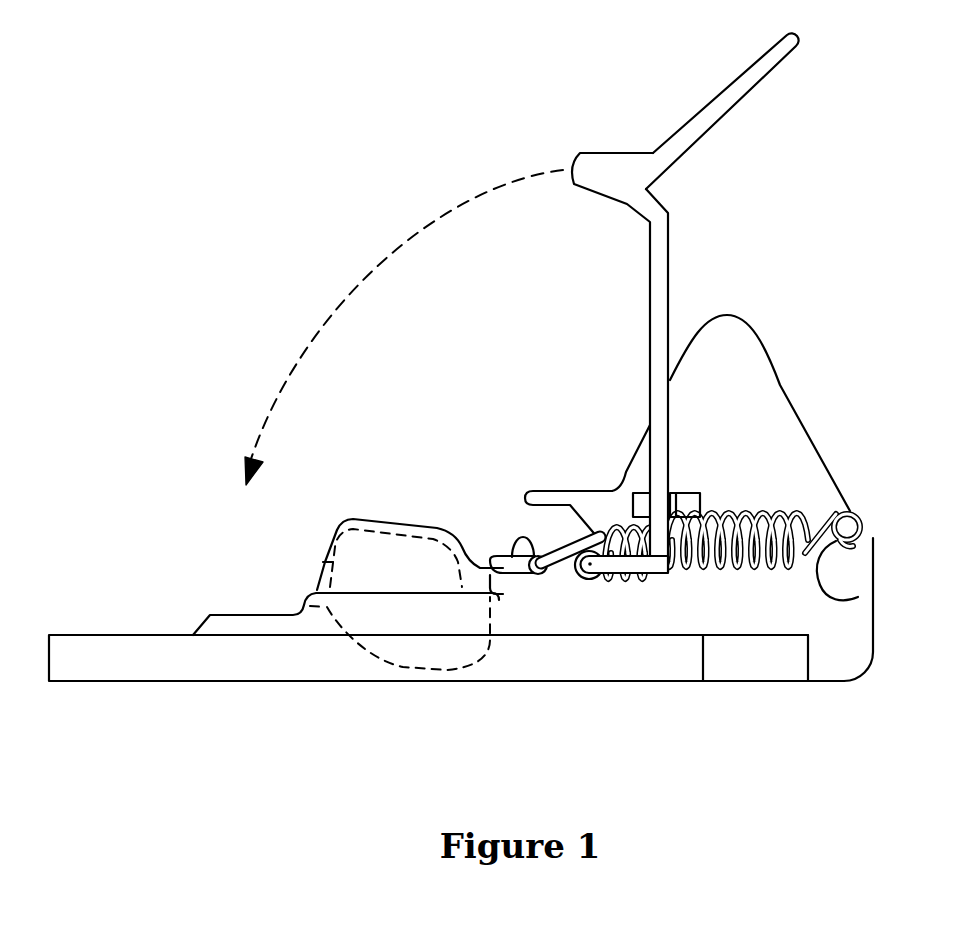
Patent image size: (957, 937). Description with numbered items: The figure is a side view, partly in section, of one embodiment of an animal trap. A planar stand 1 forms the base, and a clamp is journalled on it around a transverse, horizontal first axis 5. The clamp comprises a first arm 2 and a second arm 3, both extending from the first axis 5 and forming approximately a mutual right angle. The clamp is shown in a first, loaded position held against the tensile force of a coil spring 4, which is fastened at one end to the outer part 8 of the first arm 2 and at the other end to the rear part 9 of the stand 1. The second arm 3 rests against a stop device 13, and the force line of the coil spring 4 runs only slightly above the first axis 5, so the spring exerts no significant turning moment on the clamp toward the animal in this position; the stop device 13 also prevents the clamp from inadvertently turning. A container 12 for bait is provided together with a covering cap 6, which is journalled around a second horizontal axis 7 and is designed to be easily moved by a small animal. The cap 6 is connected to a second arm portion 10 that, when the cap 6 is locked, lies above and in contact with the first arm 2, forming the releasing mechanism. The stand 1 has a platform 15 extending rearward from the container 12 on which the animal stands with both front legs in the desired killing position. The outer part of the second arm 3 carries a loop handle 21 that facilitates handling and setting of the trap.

The stand 1 is at (165, 665).
The first arm 2 is at (618, 577).
The second arm 3 is at (670, 283).
The coil spring 4 is at (767, 562).
The first axis 5 is at (663, 577).
The covering cap 6 is at (410, 557).
The second axis 7 is at (523, 533).
The outer part 8 is at (573, 577).
The rear part 9 is at (858, 597).
The second arm portion 10 is at (557, 530).
The container 12 is at (428, 637).
The stop device 13 is at (700, 503).
The platform 15 is at (252, 625).
The loop handle 21 is at (740, 103).